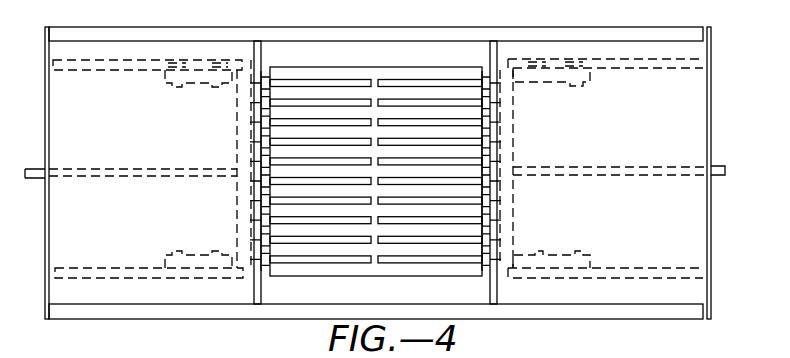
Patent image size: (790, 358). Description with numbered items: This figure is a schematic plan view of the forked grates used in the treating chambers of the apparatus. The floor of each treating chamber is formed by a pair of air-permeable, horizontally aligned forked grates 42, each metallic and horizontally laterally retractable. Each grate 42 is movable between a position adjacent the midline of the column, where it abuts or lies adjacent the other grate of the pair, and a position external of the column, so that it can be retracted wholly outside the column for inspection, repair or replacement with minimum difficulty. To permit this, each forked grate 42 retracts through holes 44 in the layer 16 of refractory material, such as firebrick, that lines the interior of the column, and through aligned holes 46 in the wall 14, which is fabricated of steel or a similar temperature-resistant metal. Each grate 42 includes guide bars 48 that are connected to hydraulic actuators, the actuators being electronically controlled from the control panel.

The wall 14 is at (253, 53).
The layer of refractory material 16 is at (262, 68).
The forked grate 42 is at (316, 78).
The holes in the layer 44 is at (489, 104).
The holes in the wall 46 is at (489, 118).
The guide bars 48 is at (571, 84).